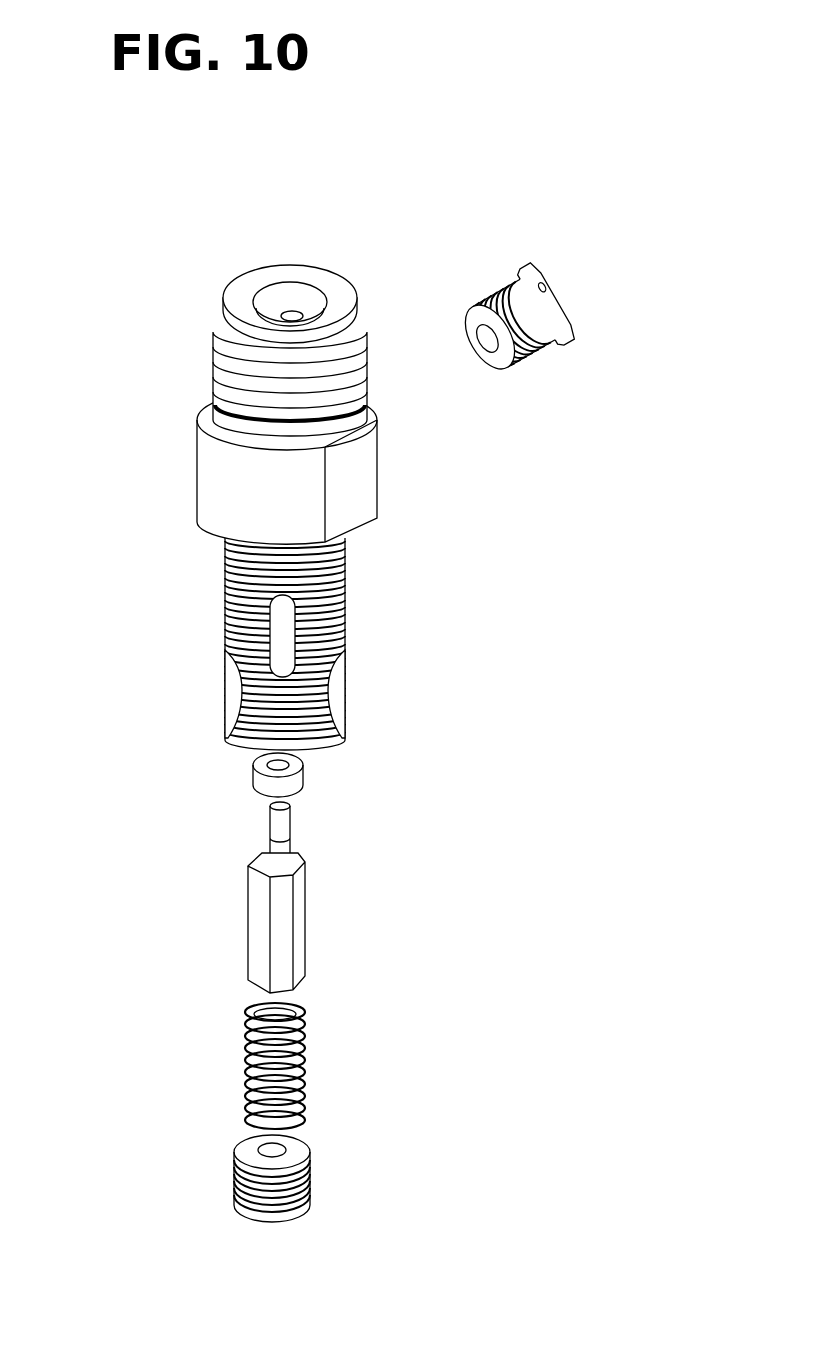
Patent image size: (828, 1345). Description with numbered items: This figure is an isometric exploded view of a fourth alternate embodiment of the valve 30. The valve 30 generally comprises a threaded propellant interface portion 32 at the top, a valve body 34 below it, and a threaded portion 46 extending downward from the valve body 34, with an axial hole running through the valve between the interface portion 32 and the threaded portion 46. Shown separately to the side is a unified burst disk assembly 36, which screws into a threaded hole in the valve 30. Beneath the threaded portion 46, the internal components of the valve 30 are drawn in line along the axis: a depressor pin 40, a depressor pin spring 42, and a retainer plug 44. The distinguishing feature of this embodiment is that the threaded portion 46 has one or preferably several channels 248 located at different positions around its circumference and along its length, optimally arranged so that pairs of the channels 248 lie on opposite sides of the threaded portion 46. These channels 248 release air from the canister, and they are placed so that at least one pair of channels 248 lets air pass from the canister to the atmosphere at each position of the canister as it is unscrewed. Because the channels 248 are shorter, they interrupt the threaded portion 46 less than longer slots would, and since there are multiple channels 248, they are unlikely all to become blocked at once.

The valve 30 is at (283, 172).
The threaded propellant interface portion 32 is at (206, 336).
The valve body 34 is at (350, 487).
The unified burst disk assembly 36 is at (584, 326).
The depressor pin 40 is at (240, 927).
The depressor pin spring 42 is at (240, 1071).
The retainer plug 44 is at (231, 1191).
The threaded portion 46 is at (240, 580).
The channels 248 is at (290, 629).